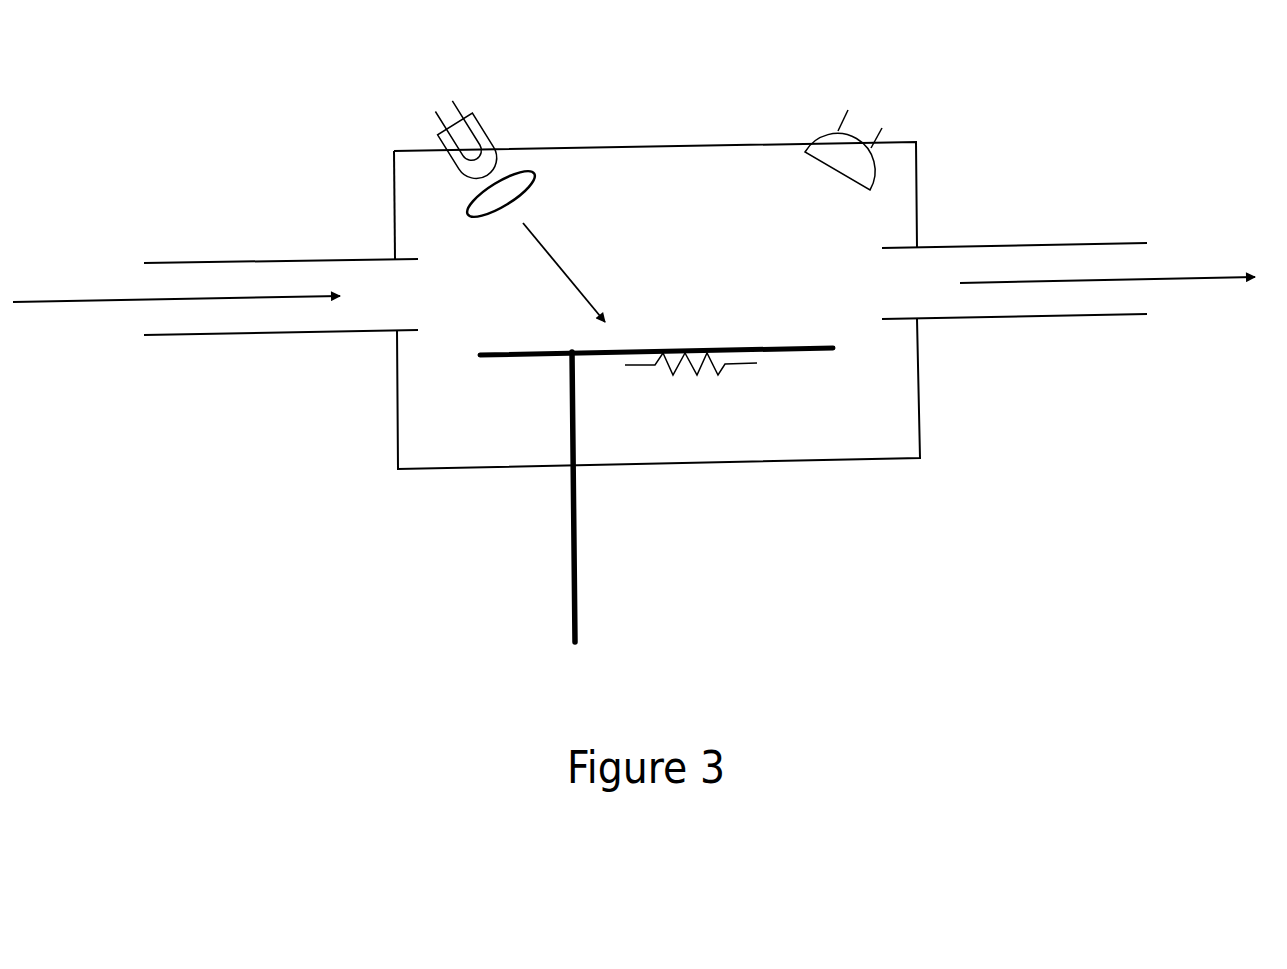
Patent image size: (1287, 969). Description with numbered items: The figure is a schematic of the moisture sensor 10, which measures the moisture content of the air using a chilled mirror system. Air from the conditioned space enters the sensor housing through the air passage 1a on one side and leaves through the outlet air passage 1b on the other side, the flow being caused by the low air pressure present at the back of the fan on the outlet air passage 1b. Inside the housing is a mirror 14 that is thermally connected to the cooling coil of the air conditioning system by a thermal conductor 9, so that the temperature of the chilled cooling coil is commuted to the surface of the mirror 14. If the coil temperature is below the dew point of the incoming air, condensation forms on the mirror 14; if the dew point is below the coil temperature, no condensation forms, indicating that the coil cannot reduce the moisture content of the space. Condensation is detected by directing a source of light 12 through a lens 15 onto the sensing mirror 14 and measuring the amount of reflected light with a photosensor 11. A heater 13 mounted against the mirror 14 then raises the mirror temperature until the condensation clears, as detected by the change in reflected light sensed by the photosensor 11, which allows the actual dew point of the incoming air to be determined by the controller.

The moisture sensor 10 is at (657, 236).
The air passage 1a is at (215, 293).
The outlet air passage 1b is at (1068, 273).
The source of light 12 is at (484, 139).
The lens 15 is at (533, 241).
The photosensor 11 is at (827, 138).
The mirror 14 is at (656, 334).
The thermal conductor 9 is at (596, 497).
The heater 13 is at (691, 384).